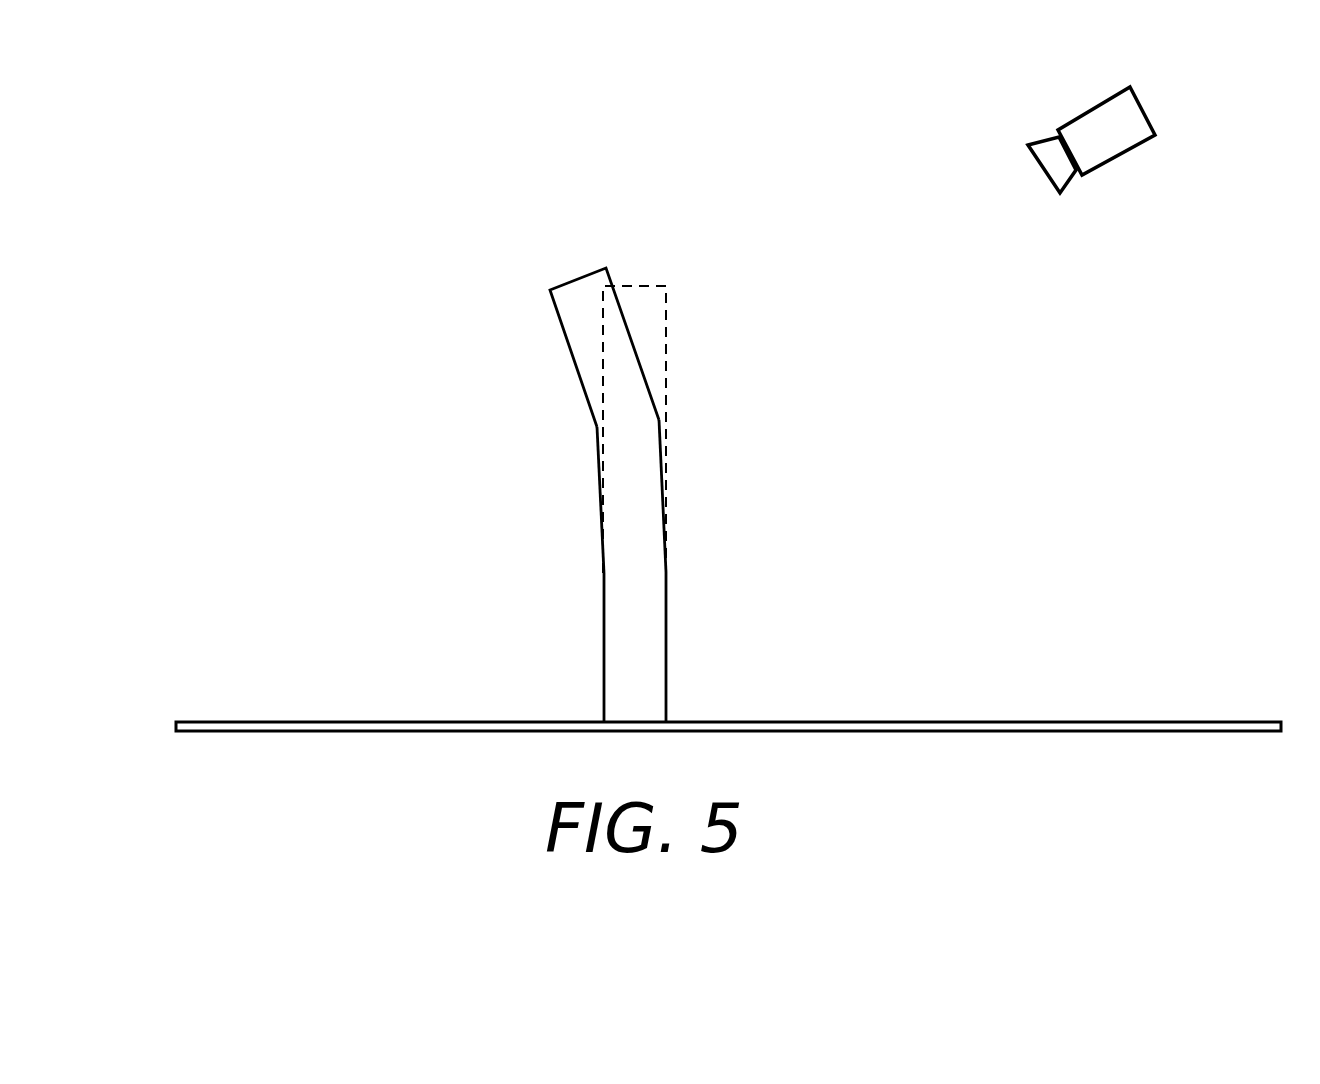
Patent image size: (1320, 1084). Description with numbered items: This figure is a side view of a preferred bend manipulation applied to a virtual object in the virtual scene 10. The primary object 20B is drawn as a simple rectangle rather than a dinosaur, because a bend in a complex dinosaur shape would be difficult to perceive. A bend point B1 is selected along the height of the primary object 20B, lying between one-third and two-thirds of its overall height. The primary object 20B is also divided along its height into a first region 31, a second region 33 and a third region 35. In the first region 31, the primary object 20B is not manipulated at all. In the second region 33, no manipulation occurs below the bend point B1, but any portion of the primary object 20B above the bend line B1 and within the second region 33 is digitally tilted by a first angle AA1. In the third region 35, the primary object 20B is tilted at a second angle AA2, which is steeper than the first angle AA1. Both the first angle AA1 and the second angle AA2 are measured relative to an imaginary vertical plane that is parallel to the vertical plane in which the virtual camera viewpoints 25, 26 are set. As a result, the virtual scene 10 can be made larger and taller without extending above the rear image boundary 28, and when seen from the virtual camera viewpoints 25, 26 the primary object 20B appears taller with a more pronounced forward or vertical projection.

The virtual scene 10 is at (398, 263).
The primary object 20B is at (587, 278).
The third region 35 is at (542, 297).
The second region 33 is at (587, 425).
The first region 31 is at (590, 578).
The first angle AA1 is at (662, 429).
The second angle AA2 is at (638, 348).
The bend point B1 is at (665, 572).
The virtual camera viewpoint 25 is at (1101, 175).
The virtual camera viewpoint 26 is at (1118, 163).
The rear image boundary 28 is at (173, 728).